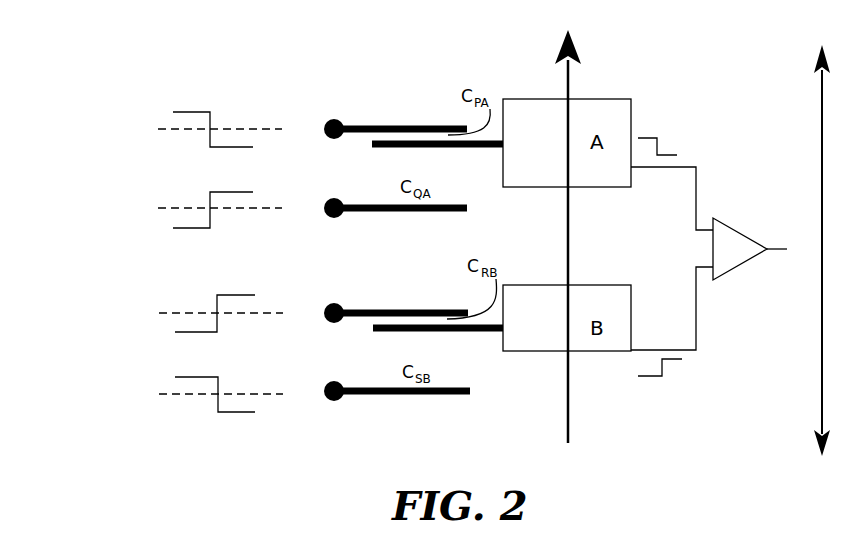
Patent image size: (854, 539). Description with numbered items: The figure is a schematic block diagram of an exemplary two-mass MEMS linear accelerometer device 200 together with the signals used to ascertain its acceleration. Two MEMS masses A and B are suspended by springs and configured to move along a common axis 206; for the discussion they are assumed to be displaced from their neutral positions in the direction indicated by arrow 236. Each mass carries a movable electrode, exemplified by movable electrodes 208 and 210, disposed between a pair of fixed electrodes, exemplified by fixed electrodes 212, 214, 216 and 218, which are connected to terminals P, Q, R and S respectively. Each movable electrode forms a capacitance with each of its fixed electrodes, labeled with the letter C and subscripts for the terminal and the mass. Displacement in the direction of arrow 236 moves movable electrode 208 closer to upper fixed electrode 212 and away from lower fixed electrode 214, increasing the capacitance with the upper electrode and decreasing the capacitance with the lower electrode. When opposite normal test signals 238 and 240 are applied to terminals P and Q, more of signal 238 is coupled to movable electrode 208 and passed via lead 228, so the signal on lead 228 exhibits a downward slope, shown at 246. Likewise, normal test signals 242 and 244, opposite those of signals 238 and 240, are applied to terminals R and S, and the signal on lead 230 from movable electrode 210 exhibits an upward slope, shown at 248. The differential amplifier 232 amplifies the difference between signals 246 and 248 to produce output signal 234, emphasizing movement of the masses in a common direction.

The two-mass MEMS linear accelerometer device 200 is at (391, 58).
The common axis 206 is at (820, 85).
The movable electrode 208 is at (481, 148).
The movable electrode 210 is at (483, 332).
The fixed electrode 212 is at (418, 125).
The fixed electrode 214 is at (393, 212).
The fixed electrode 216 is at (395, 309).
The fixed electrode 218 is at (422, 399).
The lead 228 is at (688, 164).
The lead 230 is at (688, 352).
The differential amplifier 232 is at (745, 236).
The output signal 234 is at (775, 251).
The arrow 236 is at (569, 78).
The normal test signal 238 is at (173, 112).
The normal test signal 240 is at (173, 228).
The normal test signal 242 is at (175, 332).
The normal test signal 244 is at (175, 377).
The signal with downward slope 246 is at (658, 143).
The signal with upward slope 248 is at (663, 378).